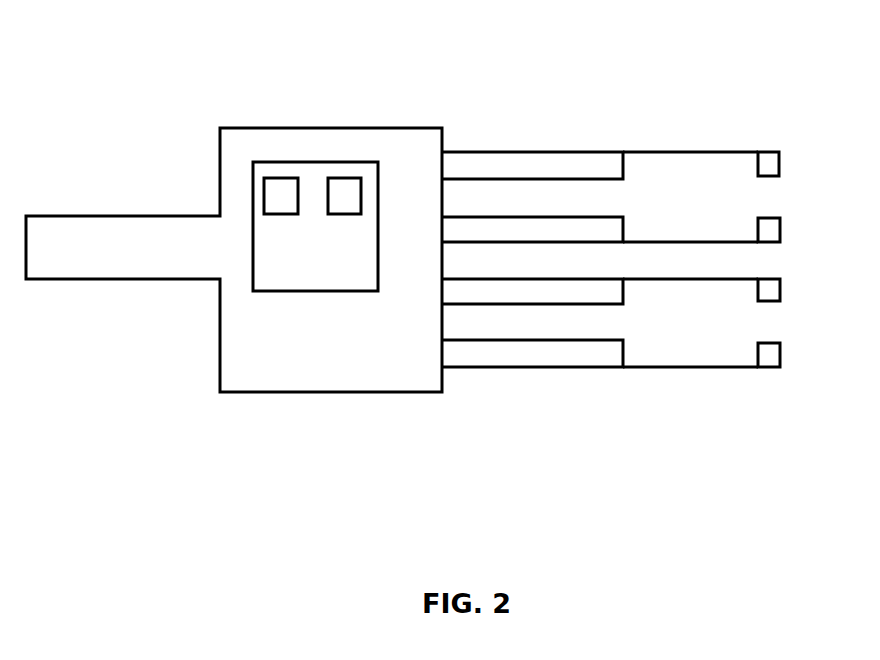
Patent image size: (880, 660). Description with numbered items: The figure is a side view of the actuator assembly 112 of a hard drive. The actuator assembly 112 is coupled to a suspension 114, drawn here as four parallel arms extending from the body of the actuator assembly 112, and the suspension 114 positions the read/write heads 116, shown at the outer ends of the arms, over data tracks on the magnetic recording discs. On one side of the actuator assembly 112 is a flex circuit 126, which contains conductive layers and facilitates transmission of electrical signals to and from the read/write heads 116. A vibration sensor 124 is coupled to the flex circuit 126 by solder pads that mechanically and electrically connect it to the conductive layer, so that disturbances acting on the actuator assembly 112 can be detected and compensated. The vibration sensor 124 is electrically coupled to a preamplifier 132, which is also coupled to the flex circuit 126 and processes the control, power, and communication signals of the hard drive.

The actuator assembly 112 is at (143, 47).
The suspension 114 is at (649, 152).
The read/write heads 116 is at (782, 167).
The vibration sensor 124 is at (287, 192).
The flex circuit 126 is at (294, 281).
The preamplifier 132 is at (350, 192).